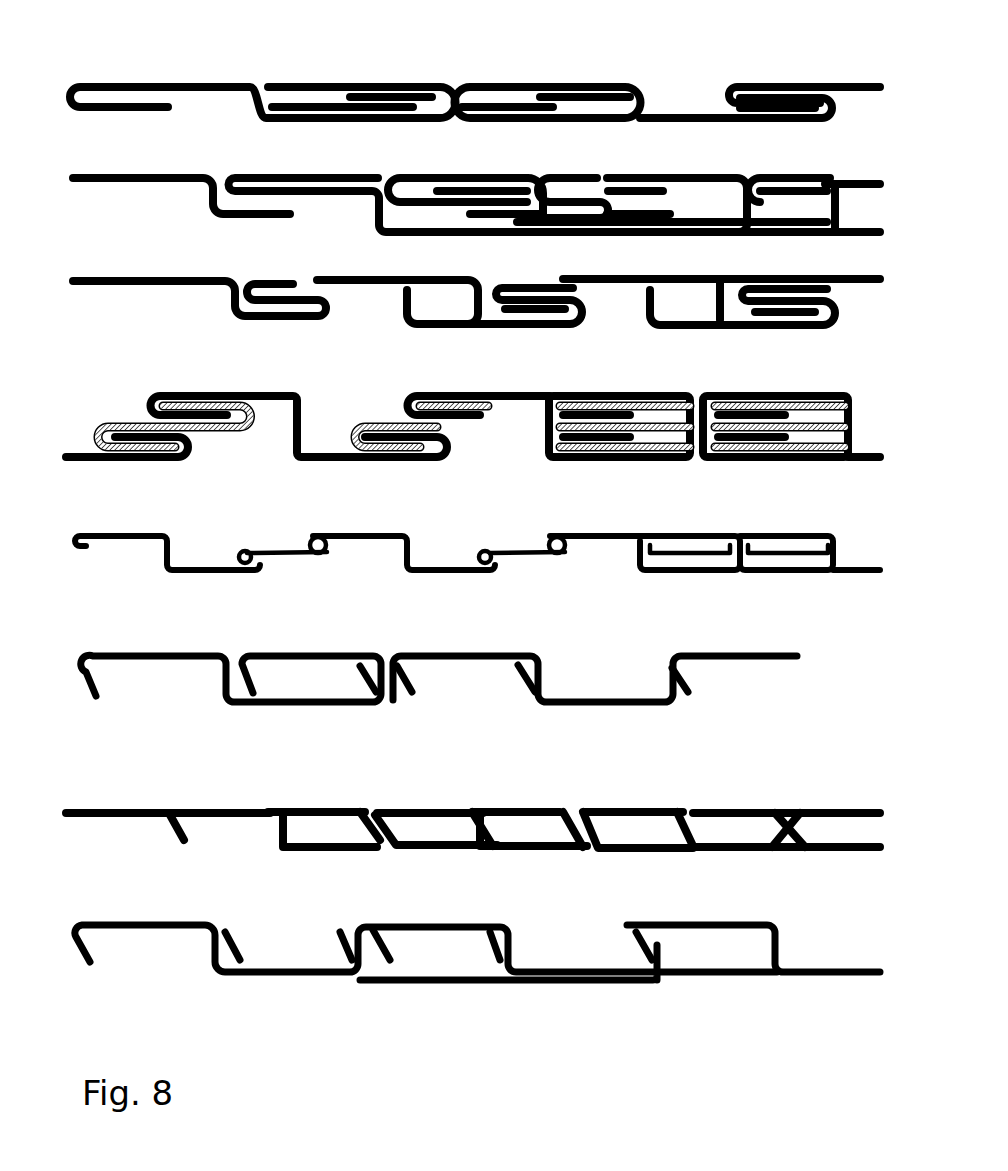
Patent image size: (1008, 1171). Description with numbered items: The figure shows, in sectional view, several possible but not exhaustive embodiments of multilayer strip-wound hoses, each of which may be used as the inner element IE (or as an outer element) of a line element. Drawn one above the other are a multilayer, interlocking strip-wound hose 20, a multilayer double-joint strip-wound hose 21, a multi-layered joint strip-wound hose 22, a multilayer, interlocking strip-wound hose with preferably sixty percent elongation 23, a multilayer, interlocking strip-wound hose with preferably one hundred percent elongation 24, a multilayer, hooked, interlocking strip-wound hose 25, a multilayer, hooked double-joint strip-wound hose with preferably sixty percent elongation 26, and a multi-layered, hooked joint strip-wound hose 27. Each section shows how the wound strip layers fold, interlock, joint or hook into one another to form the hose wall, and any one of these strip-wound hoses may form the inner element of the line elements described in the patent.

The multilayer interlocking strip-wound hose 20 is at (178, 83).
The multilayer double-joint strip-wound hose 21 is at (170, 173).
The multi-layered joint strip-wound hose 22 is at (188, 277).
The multilayer interlocking strip-wound hose with 60 percent elongation 23 is at (190, 400).
The multilayer interlocking strip-wound hose with 100 percent elongation 24 is at (163, 535).
The multilayer hooked interlocking strip-wound hose 25 is at (157, 653).
The multilayer hooked double-joint strip-wound hose with 60 percent elongation 26 is at (187, 813).
The multi-layered hooked joint strip-wound hose 27 is at (172, 922).